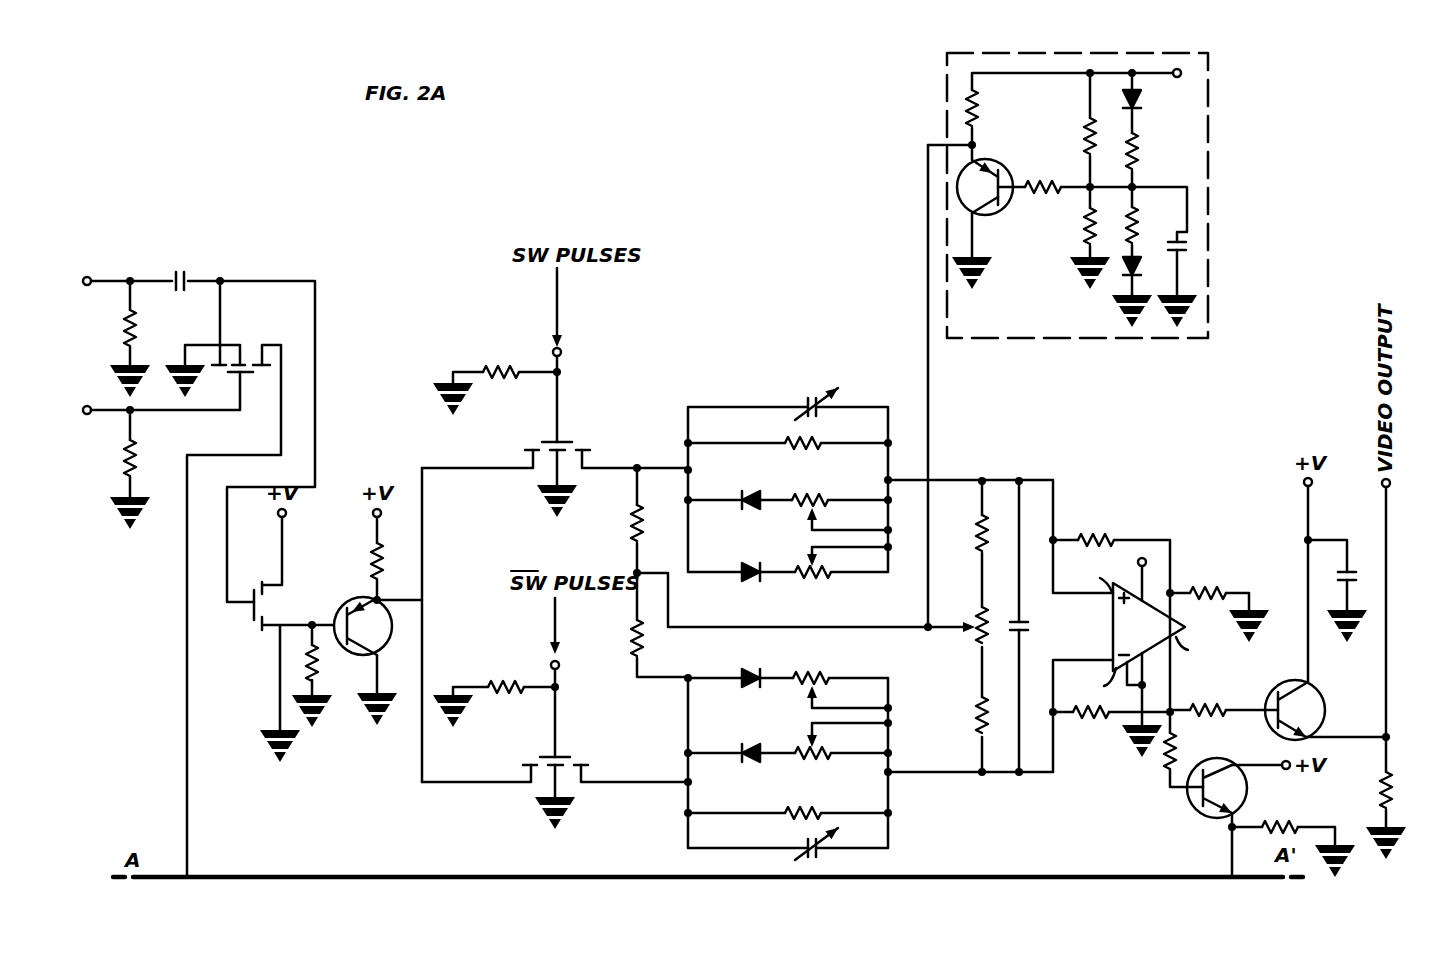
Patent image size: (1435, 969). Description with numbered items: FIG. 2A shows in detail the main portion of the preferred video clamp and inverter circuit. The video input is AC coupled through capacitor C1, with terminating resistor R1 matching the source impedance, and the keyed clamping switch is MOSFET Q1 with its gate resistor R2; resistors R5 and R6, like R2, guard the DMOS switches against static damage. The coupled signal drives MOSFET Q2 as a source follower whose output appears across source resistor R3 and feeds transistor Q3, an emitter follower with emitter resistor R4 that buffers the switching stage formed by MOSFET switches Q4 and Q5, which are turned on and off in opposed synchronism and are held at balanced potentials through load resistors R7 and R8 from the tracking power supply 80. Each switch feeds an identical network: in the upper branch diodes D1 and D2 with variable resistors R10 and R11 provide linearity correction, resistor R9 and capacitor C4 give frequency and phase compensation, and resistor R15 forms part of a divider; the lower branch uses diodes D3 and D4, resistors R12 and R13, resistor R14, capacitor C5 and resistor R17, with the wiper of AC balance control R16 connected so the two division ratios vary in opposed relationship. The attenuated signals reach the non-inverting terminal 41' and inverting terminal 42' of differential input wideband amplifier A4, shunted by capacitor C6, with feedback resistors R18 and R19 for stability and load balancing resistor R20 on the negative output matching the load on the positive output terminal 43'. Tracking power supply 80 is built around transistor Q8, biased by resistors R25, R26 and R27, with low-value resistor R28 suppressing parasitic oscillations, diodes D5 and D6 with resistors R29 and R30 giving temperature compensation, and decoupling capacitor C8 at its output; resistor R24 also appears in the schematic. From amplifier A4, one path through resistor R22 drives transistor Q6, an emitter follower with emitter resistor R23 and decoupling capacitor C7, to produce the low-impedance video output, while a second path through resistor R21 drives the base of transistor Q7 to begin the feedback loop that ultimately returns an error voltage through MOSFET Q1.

The terminating resistor R1 is at (114, 328).
The gate resistor R2 is at (148, 458).
The source resistor R3 is at (330, 663).
The emitter resistor R4 is at (394, 561).
The resistor R5 is at (501, 358).
The resistor R6 is at (506, 673).
The load resistor R7 is at (654, 523).
The load resistor R8 is at (654, 638).
The resistor R9 is at (819, 433).
The variable resistor R10 is at (832, 489).
The variable resistor R11 is at (835, 561).
The resistor R12 is at (833, 666).
The resistor R13 is at (834, 765).
The resistor R14 is at (825, 802).
The resistor R15 is at (964, 533).
The AC balance control R16 is at (964, 632).
The resistor R17 is at (963, 715).
The feedback resistor R18 is at (1104, 527).
The feedback resistor R19 is at (1096, 724).
The load balancing resistor R20 is at (1213, 581).
The resistor R21 is at (1193, 751).
The resistor R22 is at (1215, 698).
The emitter resistor R23 is at (1407, 790).
The resistor R24 is at (1284, 814).
The resistor R25 is at (996, 108).
The resistor R26 is at (1069, 136).
The resistor R27 is at (1069, 226).
The resistor R28 is at (1050, 175).
The resistor R29 is at (1156, 151).
The resistor R30 is at (1156, 225).
The capacitor C1 is at (182, 293).
The capacitor C4 is at (809, 400).
The capacitor C5 is at (808, 842).
The capacitor C6 is at (1036, 625).
The decoupling capacitor C7 is at (1363, 575).
The decoupling capacitor C8 is at (1191, 257).
The MOSFET Q1 is at (241, 344).
The MOSFET Q2 is at (246, 594).
The transistor Q3 is at (357, 616).
The MOSFET switch Q4 is at (561, 434).
The MOSFET switch Q5 is at (560, 747).
The transistor Q6 is at (1313, 710).
The transistor Q7 is at (1208, 793).
The transistor Q8 is at (985, 204).
The diode D1 is at (766, 490).
The diode D2 is at (766, 562).
The diode D3 is at (766, 668).
The diode D4 is at (766, 763).
The diode D5 is at (1151, 95).
The diode D6 is at (1150, 271).
The differential input wideband amplifier A4 is at (1116, 626).
The non-inverting terminal 41' is at (1094, 576).
The inverting terminal 42' is at (1094, 679).
The positive output terminal 43' is at (1200, 649).
The tracking power supply 80 is at (1096, 195).